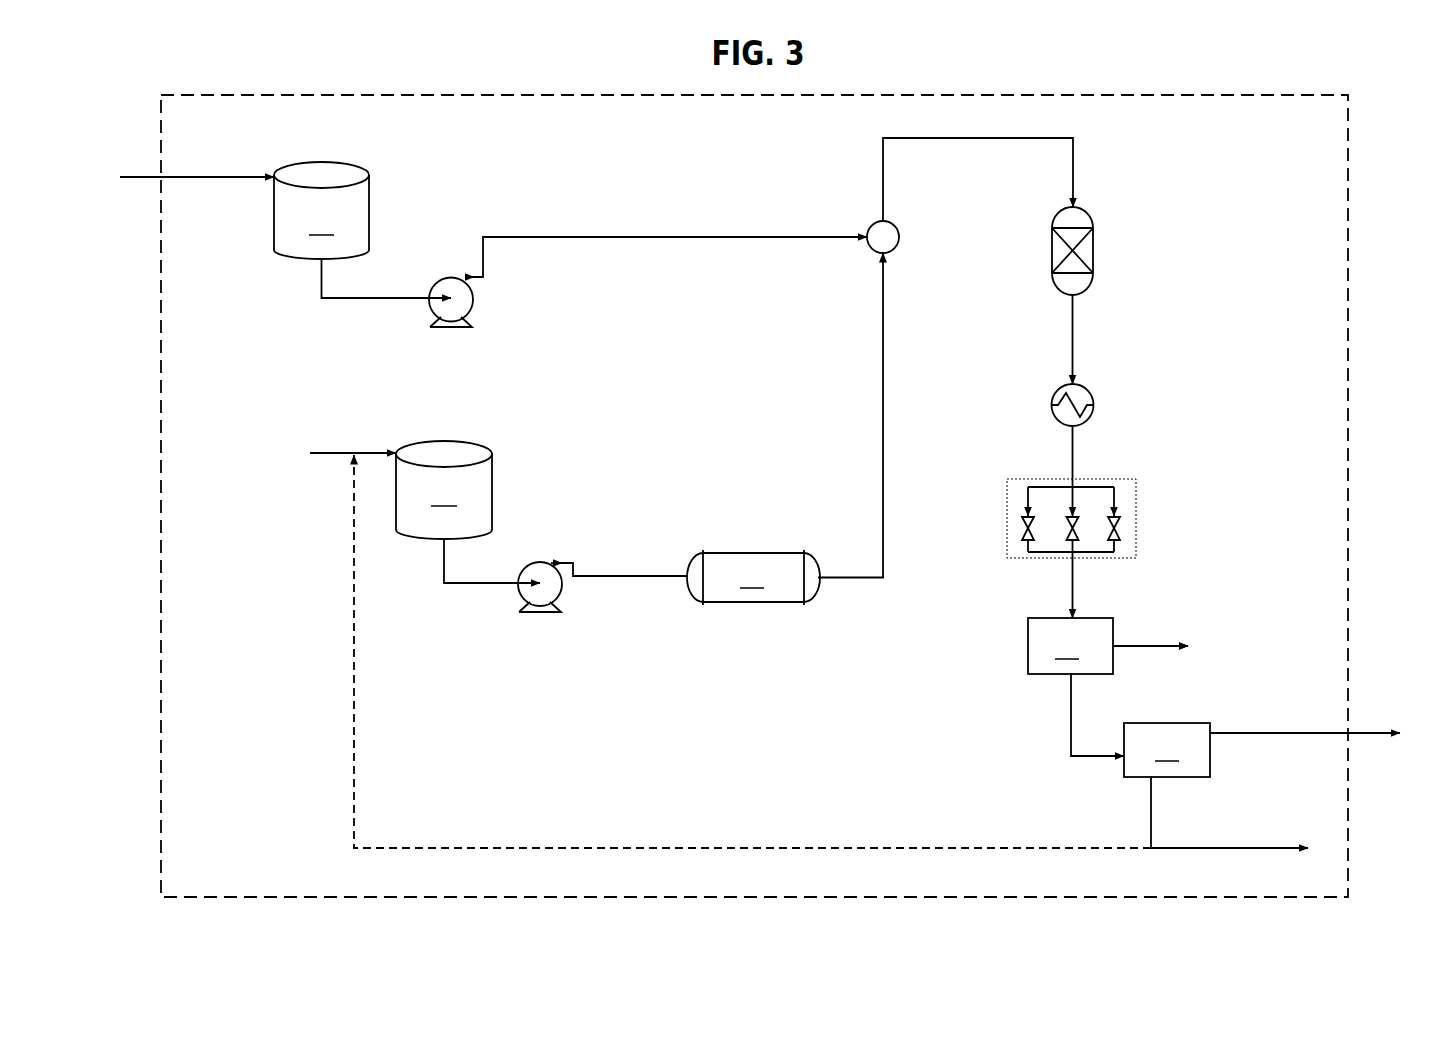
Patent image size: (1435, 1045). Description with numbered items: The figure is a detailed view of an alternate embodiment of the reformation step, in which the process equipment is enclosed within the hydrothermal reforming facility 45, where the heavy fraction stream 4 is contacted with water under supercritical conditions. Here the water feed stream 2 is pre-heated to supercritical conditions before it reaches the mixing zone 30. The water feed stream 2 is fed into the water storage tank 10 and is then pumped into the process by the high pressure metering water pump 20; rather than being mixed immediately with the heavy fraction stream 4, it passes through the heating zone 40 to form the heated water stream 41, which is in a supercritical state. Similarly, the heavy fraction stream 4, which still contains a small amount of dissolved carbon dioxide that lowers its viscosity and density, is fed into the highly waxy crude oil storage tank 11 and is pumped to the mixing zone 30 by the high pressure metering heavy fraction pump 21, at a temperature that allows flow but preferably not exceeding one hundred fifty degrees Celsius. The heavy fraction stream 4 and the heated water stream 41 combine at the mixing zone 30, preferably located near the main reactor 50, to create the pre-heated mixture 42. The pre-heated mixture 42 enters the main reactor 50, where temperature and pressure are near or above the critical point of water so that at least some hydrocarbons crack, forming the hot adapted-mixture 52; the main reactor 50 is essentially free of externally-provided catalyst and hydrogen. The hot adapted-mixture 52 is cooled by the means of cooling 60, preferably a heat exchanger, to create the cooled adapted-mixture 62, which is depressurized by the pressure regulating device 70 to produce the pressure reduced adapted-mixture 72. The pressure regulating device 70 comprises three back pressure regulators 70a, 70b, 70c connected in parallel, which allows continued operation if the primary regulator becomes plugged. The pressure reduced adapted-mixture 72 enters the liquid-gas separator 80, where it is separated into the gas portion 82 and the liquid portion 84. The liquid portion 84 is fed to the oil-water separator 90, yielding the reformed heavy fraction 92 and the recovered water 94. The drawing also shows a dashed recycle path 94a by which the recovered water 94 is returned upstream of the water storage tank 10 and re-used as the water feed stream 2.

The water feed stream 2 is at (330, 453).
The heavy fraction stream 4 is at (215, 177).
The water storage tank 10 is at (444, 490).
The highly waxy crude oil storage tank 11 is at (321, 210).
The high pressure metering water pump 20 is at (563, 585).
The high pressure metering heavy fraction pump 21 is at (453, 279).
The mixing zone 30 is at (878, 222).
The heating zone 40 is at (753, 577).
The heated water stream 41 is at (883, 391).
The pre-heated mixture 42 is at (1004, 137).
The hydrothermal reforming facility 45 is at (1348, 253).
The main reactor 50 is at (1052, 217).
The hot adapted-mixture 52 is at (1073, 350).
The means of cooling 60 is at (1057, 386).
The cooled adapted-mixture 62 is at (1073, 462).
The pressure regulating device 70 is at (1068, 494).
The back pressure regulator 70a is at (1022, 527).
The back pressure regulator 70b is at (1078, 527).
The back pressure regulator 70c is at (1119, 527).
The pressure reduced adapted-mixture 72 is at (1072, 600).
The liquid-gas separator 80 is at (1070, 646).
The gas portion 82 is at (1118, 646).
The liquid portion 84 is at (1073, 746).
The oil-water separator 90 is at (1167, 750).
The reformed heavy fraction 92 is at (1238, 733).
The recovered water 94 is at (1186, 848).
The recycle stream line 94a is at (900, 850).